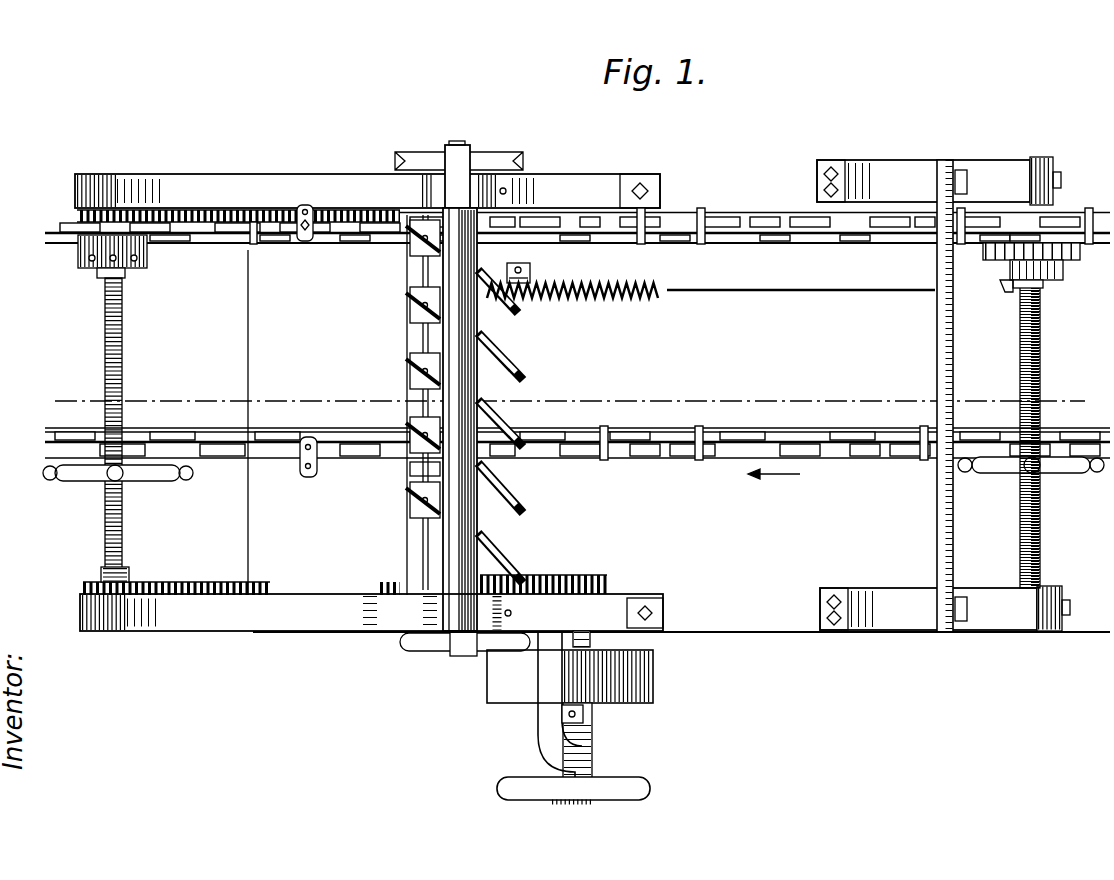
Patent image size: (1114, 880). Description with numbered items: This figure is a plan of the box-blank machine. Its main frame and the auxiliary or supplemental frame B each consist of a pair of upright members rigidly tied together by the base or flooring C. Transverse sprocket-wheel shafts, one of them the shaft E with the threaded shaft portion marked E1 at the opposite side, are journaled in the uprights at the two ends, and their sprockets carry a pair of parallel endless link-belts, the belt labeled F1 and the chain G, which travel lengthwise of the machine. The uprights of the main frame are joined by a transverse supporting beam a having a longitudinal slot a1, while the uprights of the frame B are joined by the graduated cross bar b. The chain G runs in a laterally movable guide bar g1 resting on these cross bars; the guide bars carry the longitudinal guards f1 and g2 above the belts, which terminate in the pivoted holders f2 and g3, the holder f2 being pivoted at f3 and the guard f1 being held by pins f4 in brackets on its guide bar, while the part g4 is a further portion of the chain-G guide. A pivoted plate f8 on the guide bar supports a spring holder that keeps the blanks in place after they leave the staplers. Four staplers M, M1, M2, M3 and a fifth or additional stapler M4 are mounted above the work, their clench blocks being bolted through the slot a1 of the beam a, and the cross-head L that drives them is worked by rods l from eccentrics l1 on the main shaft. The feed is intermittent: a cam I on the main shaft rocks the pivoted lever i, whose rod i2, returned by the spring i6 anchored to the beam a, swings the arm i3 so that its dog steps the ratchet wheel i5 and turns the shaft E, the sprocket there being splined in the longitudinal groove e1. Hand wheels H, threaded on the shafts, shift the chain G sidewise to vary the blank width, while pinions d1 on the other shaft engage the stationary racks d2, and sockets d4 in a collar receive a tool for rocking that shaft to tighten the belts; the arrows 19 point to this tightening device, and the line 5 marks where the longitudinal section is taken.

The pinion d1 is at (82, 216).
The stationary rack d2 is at (186, 214).
The socket d4 is at (146, 258).
The direction arrow 19 is at (113, 200).
The pin f4 is at (304, 206).
The pivoted plate f8 is at (316, 230).
The rod l is at (457, 162).
The eccentric l1 is at (498, 170).
The rail F1 is at (722, 218).
The auxiliary or supplemental frame B is at (973, 182).
The stapler M is at (410, 228).
The stapler M1 is at (410, 295).
The stapler M2 is at (410, 360).
The stapler M3 is at (410, 424).
The additional stapler M4 is at (410, 492).
The longitudinal slot a1 is at (408, 472).
The transverse supporting beam a is at (406, 552).
The pivoted holder f2 is at (546, 236).
The pivot f3 is at (591, 234).
The guard f1 is at (720, 236).
The cam I is at (522, 285).
The spring i6 is at (645, 298).
The link or rod i2 is at (790, 291).
The swinging arm i3 is at (1010, 268).
The ratchet wheel i5 is at (1040, 252).
The pivoted lever i is at (452, 683).
The cross-head L is at (480, 353).
The endless link-belt or chain G is at (787, 448).
The graduated cross bar b is at (937, 345).
The longitudinal groove e1 is at (1020, 337).
The laterally-movable trough or guide bar g1 is at (686, 462).
The guard g2 is at (672, 430).
The pivoted holder g3 is at (560, 430).
The rail g4 is at (945, 428).
The section line 5 is at (58, 386).
The hand wheel H is at (150, 482).
The transverse sprocket-wheel shaft E is at (104, 530).
The screw E1 is at (1020, 548).
The base or flooring C is at (730, 612).